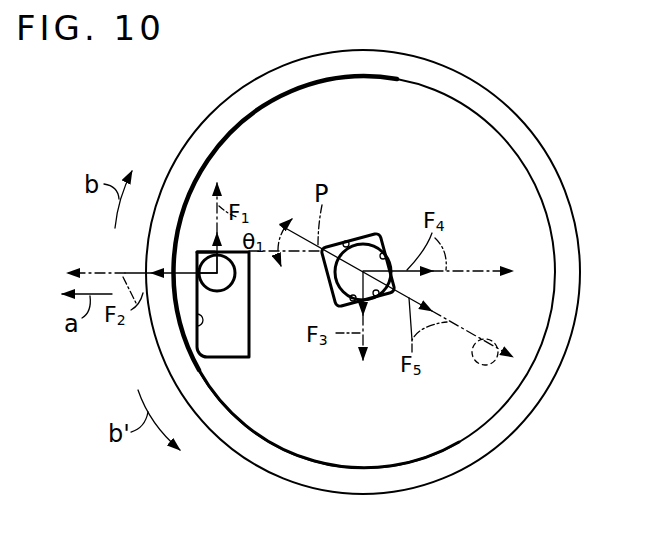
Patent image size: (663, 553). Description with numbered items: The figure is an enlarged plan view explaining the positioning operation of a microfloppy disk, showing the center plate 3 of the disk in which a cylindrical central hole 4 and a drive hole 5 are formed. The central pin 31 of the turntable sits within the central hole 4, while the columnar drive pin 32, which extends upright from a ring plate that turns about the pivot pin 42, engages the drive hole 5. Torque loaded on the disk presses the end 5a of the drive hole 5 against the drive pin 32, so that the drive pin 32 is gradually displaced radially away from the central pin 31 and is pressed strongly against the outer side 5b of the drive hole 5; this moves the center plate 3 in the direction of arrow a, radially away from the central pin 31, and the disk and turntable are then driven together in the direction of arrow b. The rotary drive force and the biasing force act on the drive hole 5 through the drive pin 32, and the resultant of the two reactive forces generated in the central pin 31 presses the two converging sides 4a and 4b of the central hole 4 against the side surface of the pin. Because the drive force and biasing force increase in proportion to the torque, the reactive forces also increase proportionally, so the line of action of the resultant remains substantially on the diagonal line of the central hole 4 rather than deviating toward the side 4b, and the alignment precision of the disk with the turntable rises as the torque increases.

The center plate 3 is at (538, 162).
The central hole 4 is at (346, 242).
The side of central hole 4a is at (385, 254).
The side of central hole 4b is at (377, 296).
The drive hole 5 is at (229, 336).
The end of drive hole 5a is at (199, 252).
The outer side of drive hole 5b is at (197, 326).
The central pin 31 is at (363, 250).
The drive pin 32 is at (237, 277).
The pivot pin 42 is at (483, 366).